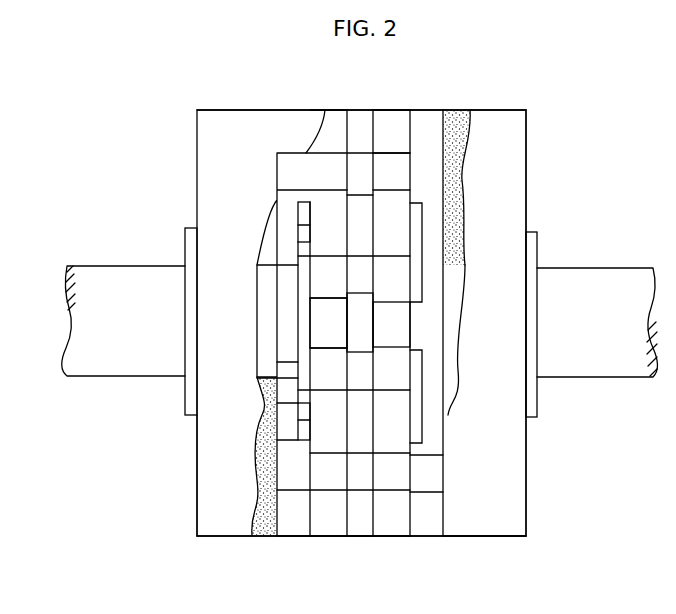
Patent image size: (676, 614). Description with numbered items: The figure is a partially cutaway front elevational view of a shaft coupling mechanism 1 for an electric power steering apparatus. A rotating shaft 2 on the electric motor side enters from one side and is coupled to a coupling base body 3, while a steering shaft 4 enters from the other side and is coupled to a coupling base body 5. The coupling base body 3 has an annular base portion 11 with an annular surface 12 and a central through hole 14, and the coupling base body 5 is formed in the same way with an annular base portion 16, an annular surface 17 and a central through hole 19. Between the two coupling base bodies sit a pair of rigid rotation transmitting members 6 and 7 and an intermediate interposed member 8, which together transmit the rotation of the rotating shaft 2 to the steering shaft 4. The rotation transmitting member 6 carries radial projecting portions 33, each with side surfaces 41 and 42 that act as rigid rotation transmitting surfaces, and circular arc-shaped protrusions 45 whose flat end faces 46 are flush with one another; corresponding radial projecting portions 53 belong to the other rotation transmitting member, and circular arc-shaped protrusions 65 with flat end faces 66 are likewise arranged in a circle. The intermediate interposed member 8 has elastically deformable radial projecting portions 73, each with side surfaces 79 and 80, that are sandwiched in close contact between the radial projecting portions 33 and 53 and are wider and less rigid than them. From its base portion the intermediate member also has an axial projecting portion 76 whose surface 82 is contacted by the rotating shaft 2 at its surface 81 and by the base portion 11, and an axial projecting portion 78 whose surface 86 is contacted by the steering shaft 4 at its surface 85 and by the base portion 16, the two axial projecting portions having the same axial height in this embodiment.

The shaft coupling mechanism 1 is at (165, 156).
The rotating shaft 2 is at (88, 365).
The coupling base body 3 is at (188, 468).
The steering shaft 4 is at (616, 283).
The coupling base body 5 is at (529, 192).
The rotation transmitting member 6 is at (326, 108).
The rotation transmitting member 7 is at (396, 108).
The intermediate interposed member 8 is at (358, 540).
The annular base portion 11 is at (210, 148).
The annular surface 12 is at (278, 503).
The through hole 14 is at (272, 280).
The annular base portion 16 is at (500, 486).
The annular surface 17 is at (443, 143).
The through hole 19 is at (500, 373).
The radial projecting portions 33 is at (322, 218).
The side surface 41 is at (325, 205).
The side surface 42 is at (322, 280).
The circular arc-shaped protrusions 45 is at (305, 217).
The end faces 46 is at (300, 352).
The radial projecting portions 53 is at (398, 218).
The circular arc-shaped protrusions 65 is at (452, 224).
The end faces 66 is at (417, 237).
The radial projecting portions 73 is at (363, 170).
The axial projecting portion 76 is at (306, 325).
The axial projecting portion 78 is at (428, 340).
The side surface 79 is at (368, 225).
The side surface 80 is at (363, 287).
The surface 81 is at (312, 307).
The surface 82 is at (312, 303).
The surface 85 is at (420, 325).
The surface 86 is at (442, 347).